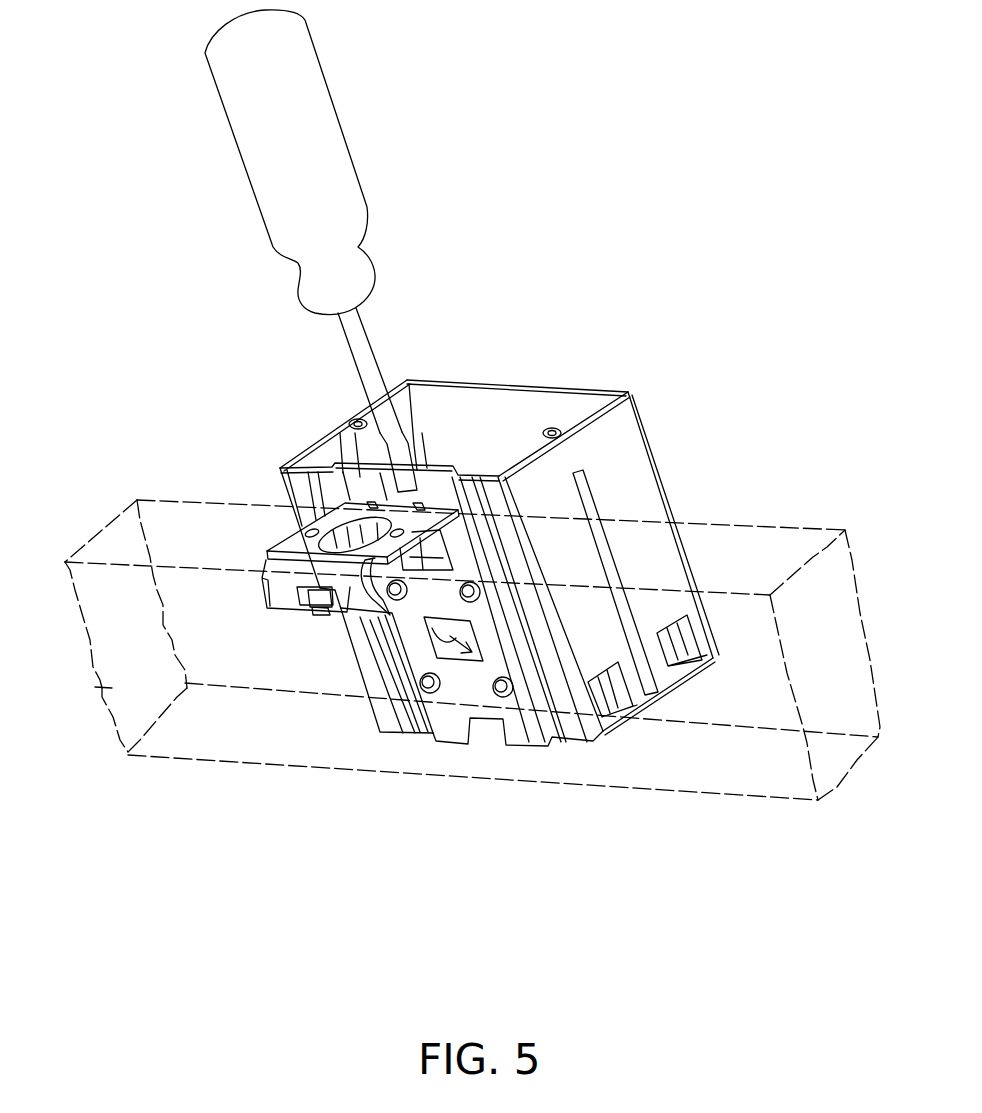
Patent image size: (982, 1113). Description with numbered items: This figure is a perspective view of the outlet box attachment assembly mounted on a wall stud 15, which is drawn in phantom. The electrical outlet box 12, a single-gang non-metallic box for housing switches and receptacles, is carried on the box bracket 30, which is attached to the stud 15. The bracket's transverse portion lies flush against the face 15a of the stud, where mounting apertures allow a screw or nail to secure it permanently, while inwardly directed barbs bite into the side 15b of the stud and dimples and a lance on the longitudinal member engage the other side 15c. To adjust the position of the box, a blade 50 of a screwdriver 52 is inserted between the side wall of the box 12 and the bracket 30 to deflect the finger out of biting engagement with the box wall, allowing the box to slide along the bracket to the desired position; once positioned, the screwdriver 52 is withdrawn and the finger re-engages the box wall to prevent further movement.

The electrical outlet box 12 is at (655, 495).
The stud 15 is at (368, 750).
The face of the stud 15a is at (763, 567).
The side of the stud 15b is at (100, 688).
The side of the stud 15c is at (183, 502).
The box bracket 30 is at (293, 548).
The blade 50 is at (397, 462).
The screwdriver 52 is at (312, 122).